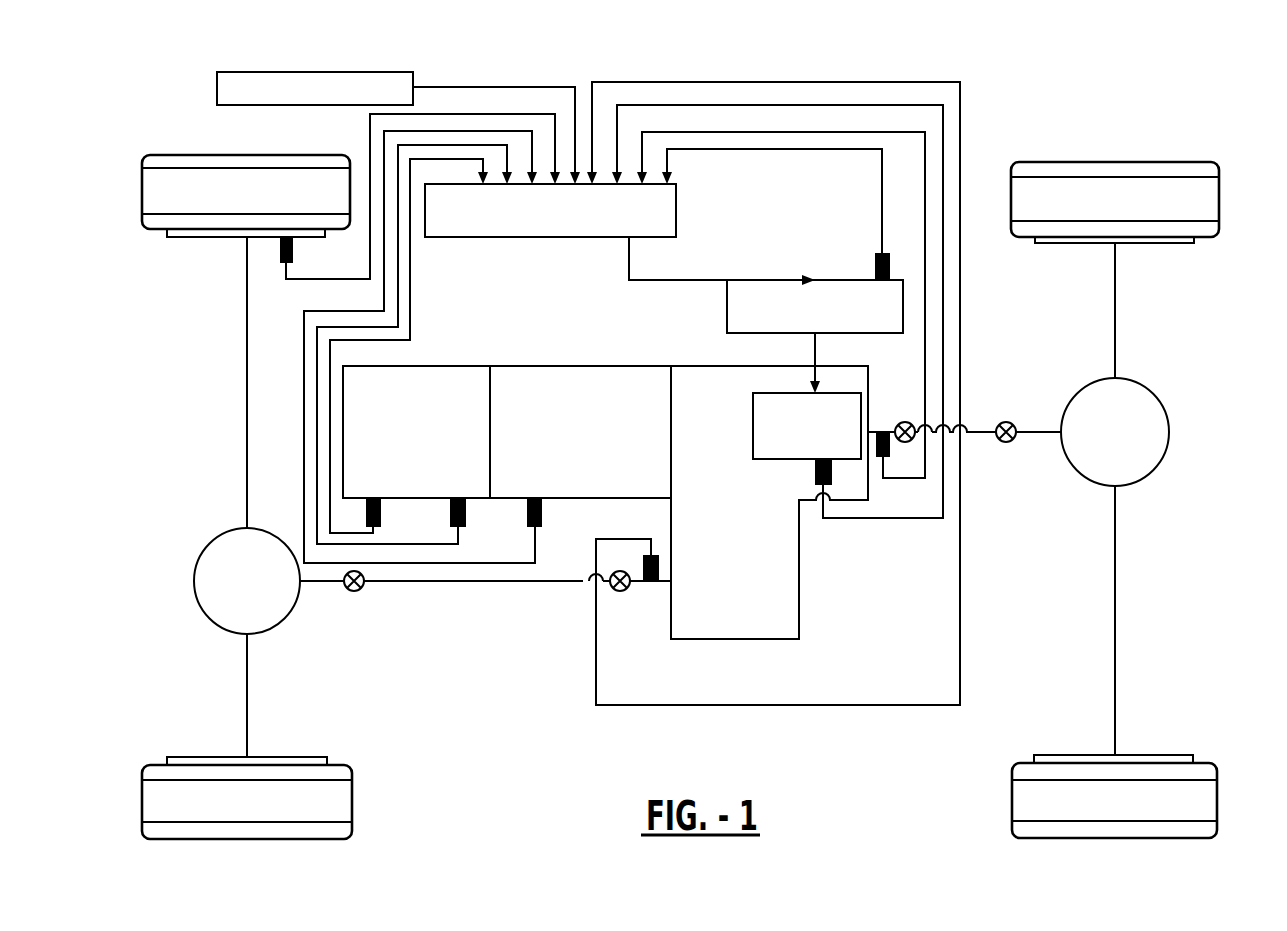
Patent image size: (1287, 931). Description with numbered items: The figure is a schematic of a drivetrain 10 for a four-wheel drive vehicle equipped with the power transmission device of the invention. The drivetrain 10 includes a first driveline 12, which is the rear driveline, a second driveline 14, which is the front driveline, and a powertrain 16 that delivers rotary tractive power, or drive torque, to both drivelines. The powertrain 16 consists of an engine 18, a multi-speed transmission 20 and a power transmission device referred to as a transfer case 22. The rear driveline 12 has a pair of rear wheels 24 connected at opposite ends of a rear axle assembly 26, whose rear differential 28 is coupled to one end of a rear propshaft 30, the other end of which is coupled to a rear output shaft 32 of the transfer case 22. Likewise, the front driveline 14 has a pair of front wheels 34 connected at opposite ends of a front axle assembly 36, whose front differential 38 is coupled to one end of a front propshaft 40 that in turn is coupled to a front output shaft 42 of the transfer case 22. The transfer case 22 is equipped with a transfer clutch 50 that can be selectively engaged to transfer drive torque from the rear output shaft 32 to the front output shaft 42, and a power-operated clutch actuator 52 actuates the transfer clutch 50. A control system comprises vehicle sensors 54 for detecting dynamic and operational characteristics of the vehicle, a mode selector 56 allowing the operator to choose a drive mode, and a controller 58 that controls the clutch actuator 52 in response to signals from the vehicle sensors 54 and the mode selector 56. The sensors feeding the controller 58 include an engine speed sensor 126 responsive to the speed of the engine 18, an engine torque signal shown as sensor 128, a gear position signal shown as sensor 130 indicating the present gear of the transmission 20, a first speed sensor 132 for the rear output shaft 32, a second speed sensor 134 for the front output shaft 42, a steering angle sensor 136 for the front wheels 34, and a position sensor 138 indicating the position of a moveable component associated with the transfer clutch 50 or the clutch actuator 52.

The drivetrain 10 is at (972, 130).
The first driveline 12 is at (1008, 396).
The second driveline 14 is at (480, 649).
The powertrain 16 is at (510, 513).
The engine 18 is at (398, 505).
The multi-speed transmission 20 is at (558, 505).
The transfer case 22 is at (848, 490).
The rear wheels 24 is at (1197, 196).
The rear axle assembly 26 is at (1128, 303).
The rear differential 28 is at (1151, 452).
The rear propshaft 30 is at (985, 440).
The rear output shaft 32 is at (875, 430).
The front wheels 34 is at (180, 184).
The front axle assembly 36 is at (190, 376).
The front differential 38 is at (230, 583).
The front propshaft 40 is at (553, 583).
The front output shaft 42 is at (652, 587).
The transfer clutch 50 is at (753, 448).
The clutch actuator 52 is at (727, 318).
The vehicle sensors 54 is at (552, 558).
The mode selector 56 is at (217, 84).
The controller 58 is at (652, 208).
The engine speed sensor 126 is at (374, 498).
The engine torque sensor 128 is at (460, 498).
The gear position sensor 130 is at (536, 498).
The first speed sensor 132 is at (892, 447).
The second speed sensor 134 is at (655, 553).
The steering angle sensor 136 is at (282, 248).
The position sensor 138 is at (872, 266).